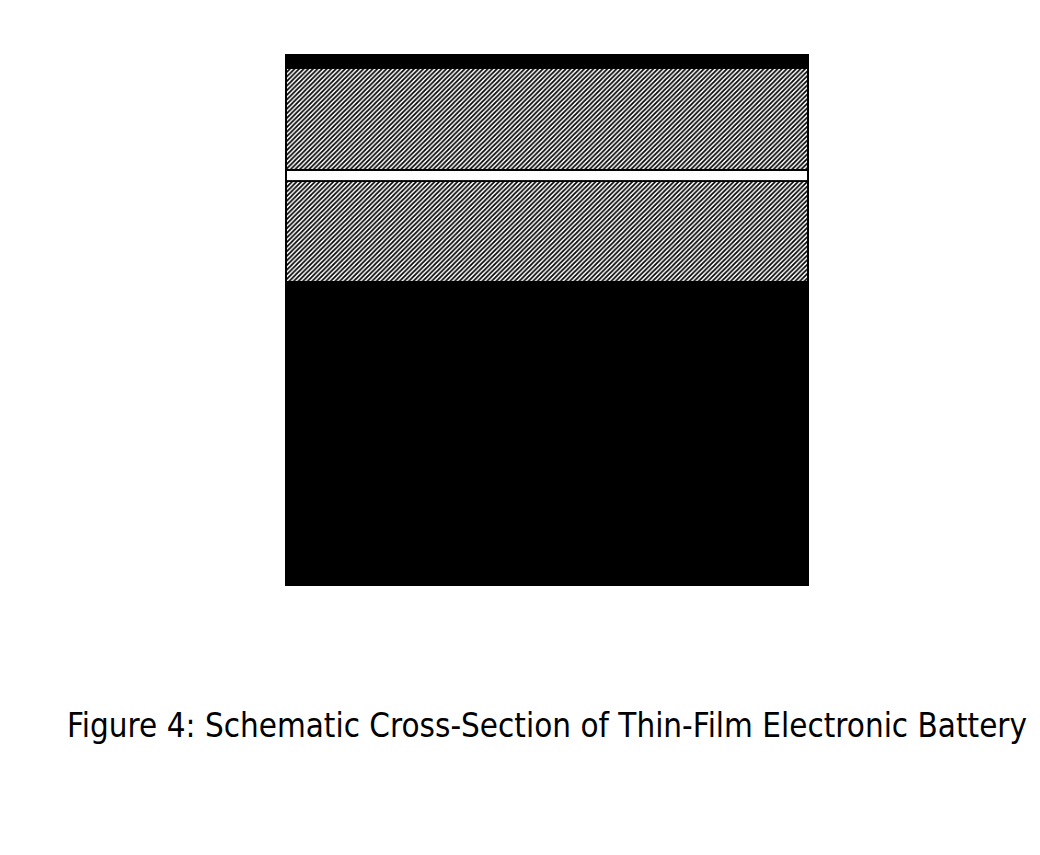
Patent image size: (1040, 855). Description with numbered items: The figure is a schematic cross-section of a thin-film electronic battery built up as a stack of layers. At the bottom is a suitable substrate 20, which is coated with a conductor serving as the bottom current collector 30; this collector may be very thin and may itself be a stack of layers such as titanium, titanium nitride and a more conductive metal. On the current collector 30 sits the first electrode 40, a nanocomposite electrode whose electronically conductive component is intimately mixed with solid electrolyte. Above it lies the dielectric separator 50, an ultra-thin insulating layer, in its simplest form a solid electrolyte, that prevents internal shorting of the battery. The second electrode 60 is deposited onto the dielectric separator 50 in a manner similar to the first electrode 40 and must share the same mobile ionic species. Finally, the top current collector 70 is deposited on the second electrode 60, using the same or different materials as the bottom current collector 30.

The substrate 20 is at (547, 433).
The current collector 30 is at (810, 285).
The electrode 1 40 is at (547, 231).
The dielectric separator 50 is at (810, 173).
The electrode 2 60 is at (547, 119).
The current collector 70 is at (811, 54).